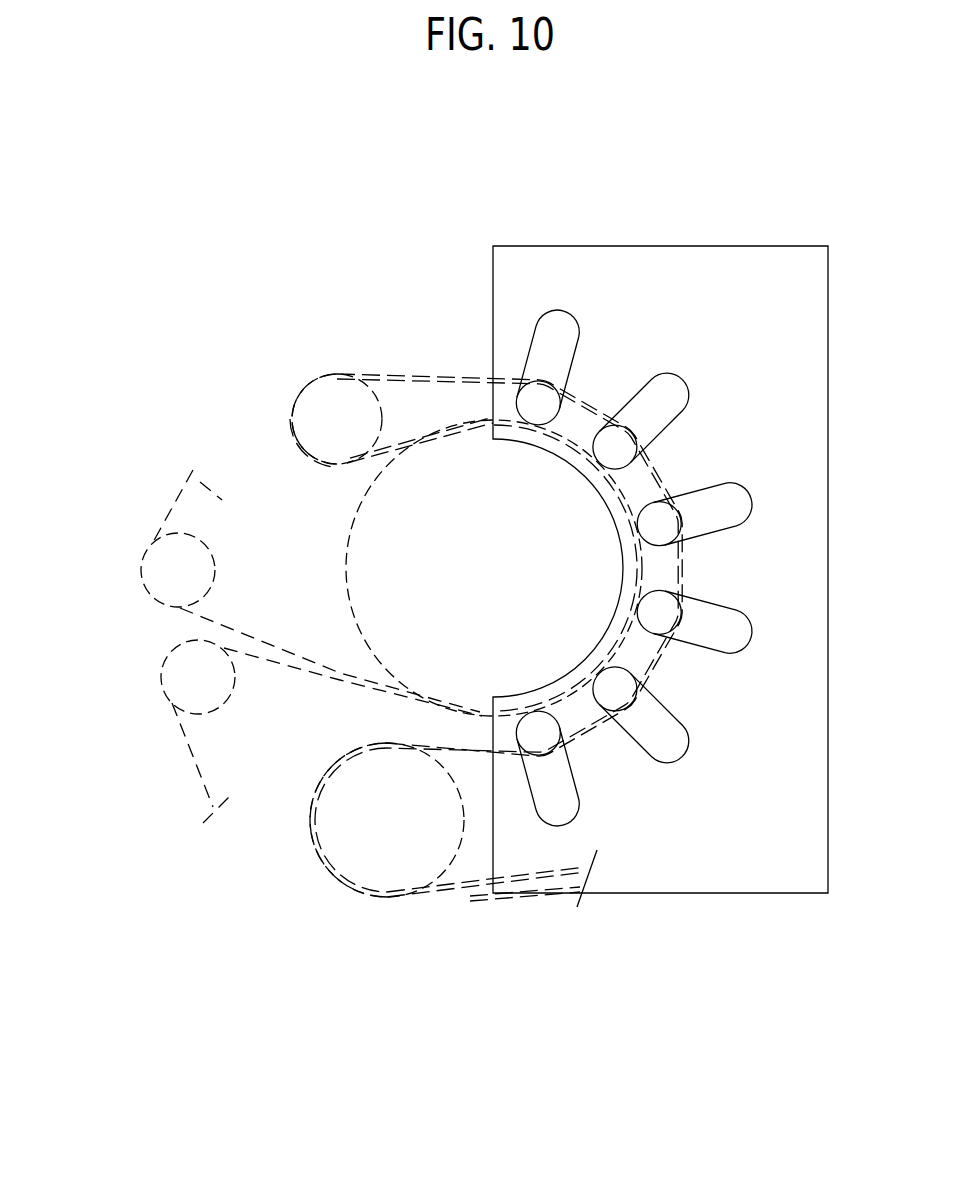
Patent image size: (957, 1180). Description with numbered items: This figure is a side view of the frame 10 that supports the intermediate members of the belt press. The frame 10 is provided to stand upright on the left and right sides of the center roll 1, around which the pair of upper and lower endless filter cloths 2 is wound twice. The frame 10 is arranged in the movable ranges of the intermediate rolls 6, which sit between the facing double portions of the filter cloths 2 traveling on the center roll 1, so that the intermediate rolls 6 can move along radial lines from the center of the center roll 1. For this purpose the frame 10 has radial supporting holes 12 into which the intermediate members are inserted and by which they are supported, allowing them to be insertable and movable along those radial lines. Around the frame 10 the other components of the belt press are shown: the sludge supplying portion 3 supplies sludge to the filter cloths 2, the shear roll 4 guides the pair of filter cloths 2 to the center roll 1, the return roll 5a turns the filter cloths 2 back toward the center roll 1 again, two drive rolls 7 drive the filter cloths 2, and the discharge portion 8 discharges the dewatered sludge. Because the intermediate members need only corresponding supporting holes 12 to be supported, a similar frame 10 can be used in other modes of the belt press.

The center roll 1 is at (335, 563).
The filter cloths 2 is at (520, 896).
The sludge supplying portion 3 is at (604, 879).
The shear roll 4 is at (343, 863).
The return roll 5a is at (338, 418).
The intermediate rolls 6 is at (537, 413).
The drive rolls 7 is at (197, 572).
The discharge portion 8 is at (120, 640).
The frame 10 is at (646, 262).
The supporting holes 12 is at (553, 328).